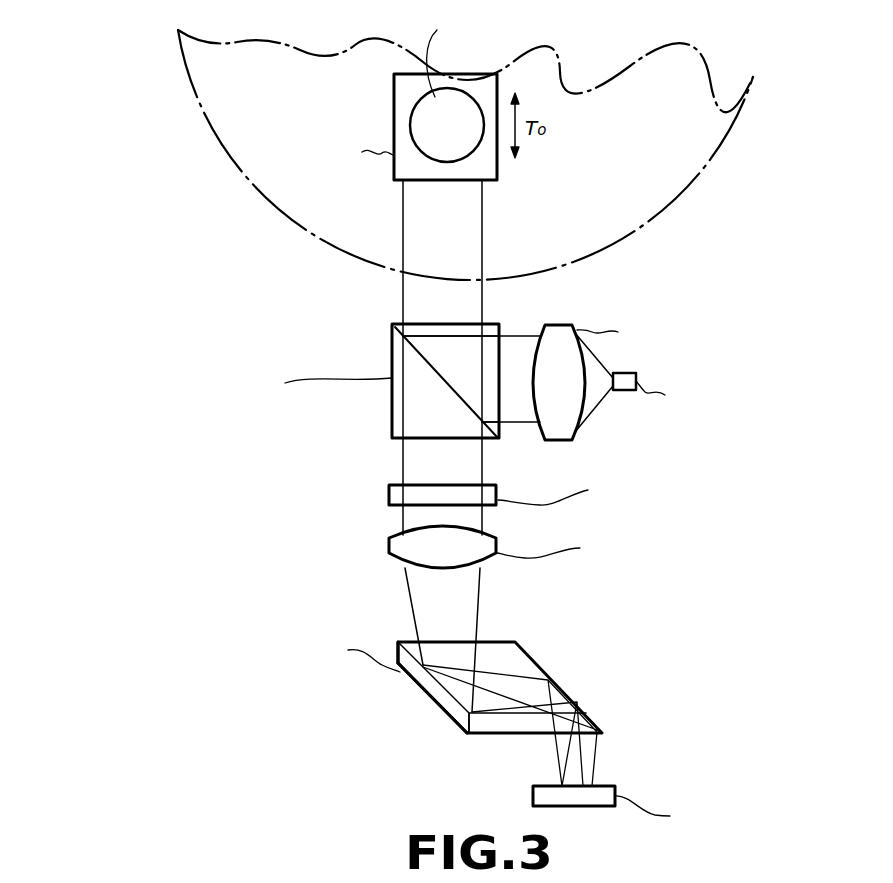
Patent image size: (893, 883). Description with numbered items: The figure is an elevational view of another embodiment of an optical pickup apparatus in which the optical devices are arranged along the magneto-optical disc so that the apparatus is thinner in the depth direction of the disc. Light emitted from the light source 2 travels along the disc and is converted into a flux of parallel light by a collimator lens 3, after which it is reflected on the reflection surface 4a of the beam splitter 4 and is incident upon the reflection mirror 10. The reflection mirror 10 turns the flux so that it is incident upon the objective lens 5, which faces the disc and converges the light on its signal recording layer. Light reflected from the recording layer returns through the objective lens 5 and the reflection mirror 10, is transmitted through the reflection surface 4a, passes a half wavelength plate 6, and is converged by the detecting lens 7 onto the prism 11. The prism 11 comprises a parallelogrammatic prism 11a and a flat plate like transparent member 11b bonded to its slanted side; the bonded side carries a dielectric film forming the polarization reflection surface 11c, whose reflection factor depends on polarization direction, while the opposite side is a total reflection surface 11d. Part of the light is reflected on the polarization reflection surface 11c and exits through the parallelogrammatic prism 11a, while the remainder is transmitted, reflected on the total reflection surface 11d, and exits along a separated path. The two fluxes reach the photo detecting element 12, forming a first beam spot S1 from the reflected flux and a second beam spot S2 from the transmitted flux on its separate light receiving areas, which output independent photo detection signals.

The light source 2 is at (626, 390).
The collimator lens 3 is at (563, 333).
The beam splitter 4 is at (392, 355).
The reflection surface 4a is at (437, 375).
The objective lens 5 is at (424, 125).
The half wavelength plate 6 is at (496, 495).
The detecting lens 7 is at (496, 547).
The reflection mirror 10 is at (497, 175).
The prism 11 is at (567, 653).
The parallelogrammatic prism 11a is at (512, 656).
The flat plate like transparent member 11b is at (443, 695).
The polarization reflection surface 11c is at (405, 644).
The total reflection surface 11d is at (462, 725).
The photo detecting element 12 is at (628, 779).
The first beam spot S1 is at (562, 786).
The second beam spot S2 is at (595, 786).